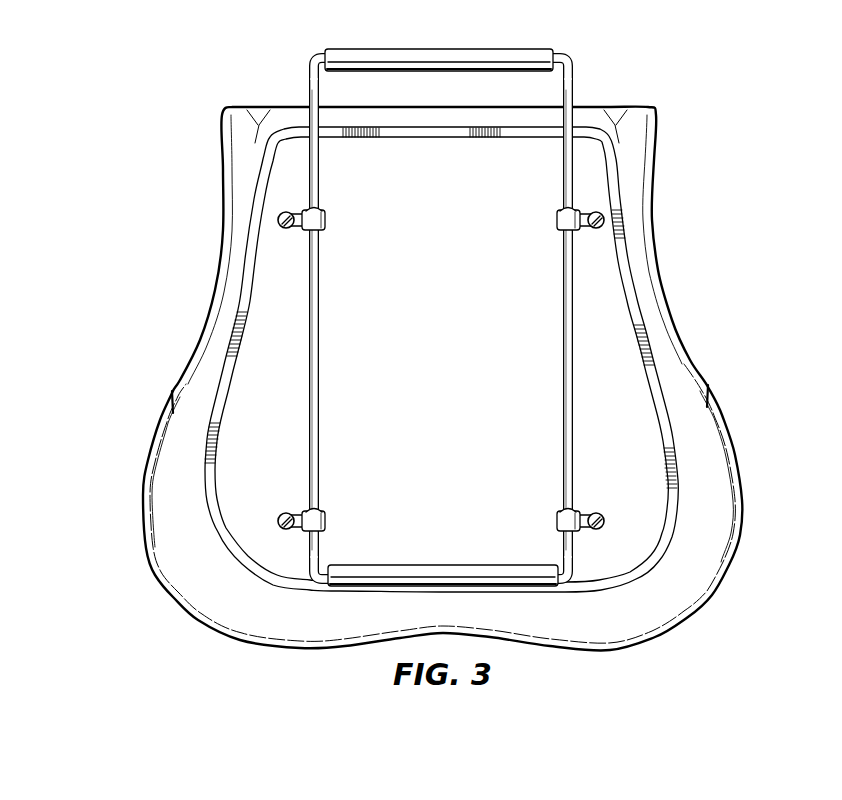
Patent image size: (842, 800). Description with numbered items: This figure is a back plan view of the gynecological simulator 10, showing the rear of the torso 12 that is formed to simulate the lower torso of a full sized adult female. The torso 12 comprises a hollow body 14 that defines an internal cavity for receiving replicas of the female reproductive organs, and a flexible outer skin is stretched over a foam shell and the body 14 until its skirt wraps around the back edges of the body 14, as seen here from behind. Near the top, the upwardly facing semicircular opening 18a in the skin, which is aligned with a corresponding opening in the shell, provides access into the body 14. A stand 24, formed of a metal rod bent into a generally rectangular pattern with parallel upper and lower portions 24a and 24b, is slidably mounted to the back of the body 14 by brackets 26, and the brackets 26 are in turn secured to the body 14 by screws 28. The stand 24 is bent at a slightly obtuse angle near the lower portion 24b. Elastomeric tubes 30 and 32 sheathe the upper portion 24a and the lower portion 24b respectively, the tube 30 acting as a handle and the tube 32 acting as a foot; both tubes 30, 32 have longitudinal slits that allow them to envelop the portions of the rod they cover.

The gynecological simulator 10 is at (162, 350).
The torso 12 is at (217, 274).
The hollow body 14 is at (618, 377).
The semicircular opening 18a is at (634, 160).
The stand 24 is at (319, 357).
The upper portion 24a is at (569, 57).
The lower portion 24b is at (318, 581).
The brackets 26 is at (327, 224).
The screws 28 is at (282, 216).
The elastomeric tube 30 is at (539, 48).
The elastomeric tube 32 is at (500, 565).